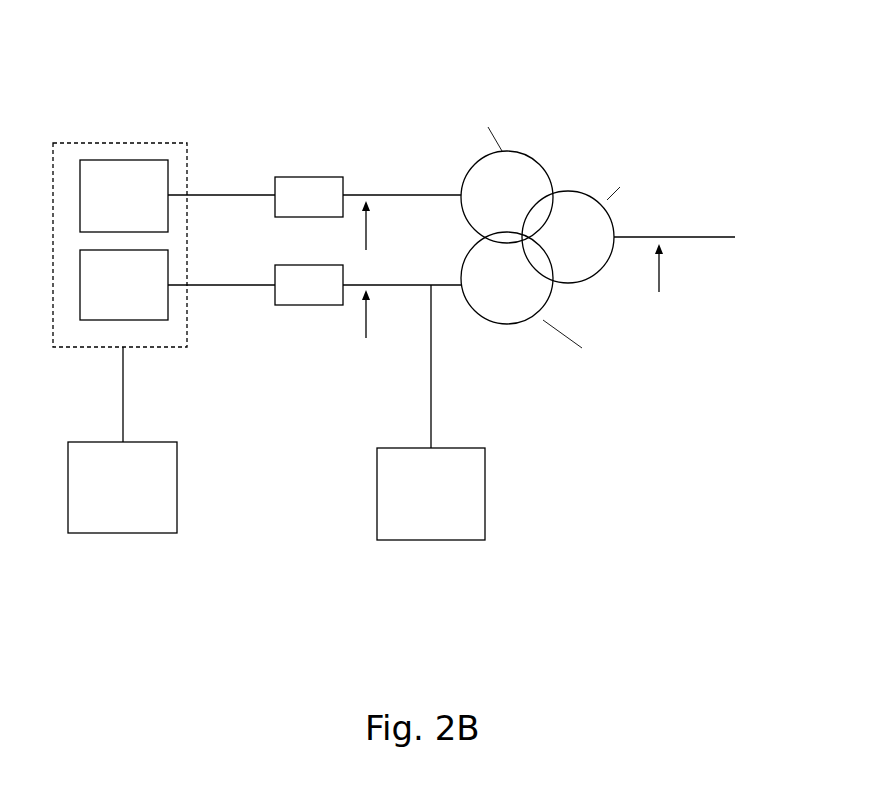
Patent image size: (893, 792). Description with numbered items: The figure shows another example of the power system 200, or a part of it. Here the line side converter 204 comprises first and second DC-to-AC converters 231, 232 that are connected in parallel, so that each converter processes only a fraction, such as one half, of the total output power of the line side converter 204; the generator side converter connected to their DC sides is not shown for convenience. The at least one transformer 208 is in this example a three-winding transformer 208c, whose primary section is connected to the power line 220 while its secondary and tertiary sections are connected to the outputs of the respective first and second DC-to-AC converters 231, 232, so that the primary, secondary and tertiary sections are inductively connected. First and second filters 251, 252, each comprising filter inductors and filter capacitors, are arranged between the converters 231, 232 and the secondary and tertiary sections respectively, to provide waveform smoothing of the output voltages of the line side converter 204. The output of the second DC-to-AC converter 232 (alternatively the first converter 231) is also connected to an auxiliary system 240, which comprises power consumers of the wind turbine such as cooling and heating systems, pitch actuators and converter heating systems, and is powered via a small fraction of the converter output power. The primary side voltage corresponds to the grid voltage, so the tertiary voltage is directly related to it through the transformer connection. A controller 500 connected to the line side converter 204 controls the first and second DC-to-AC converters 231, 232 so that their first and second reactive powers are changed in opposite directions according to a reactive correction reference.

The power system 200 is at (274, 62).
The line side converter 204 is at (130, 143).
The first DC-to-AC converter 231 is at (105, 204).
The second DC-to-AC converter 232 is at (105, 292).
The first filter 251 is at (290, 206).
The second filter 252 is at (290, 294).
The transformer 208 is at (558, 158).
The three-winding transformer 208c is at (558, 219).
The power line 220 is at (683, 230).
The controller 500 is at (178, 502).
The auxiliary system 240 is at (488, 493).